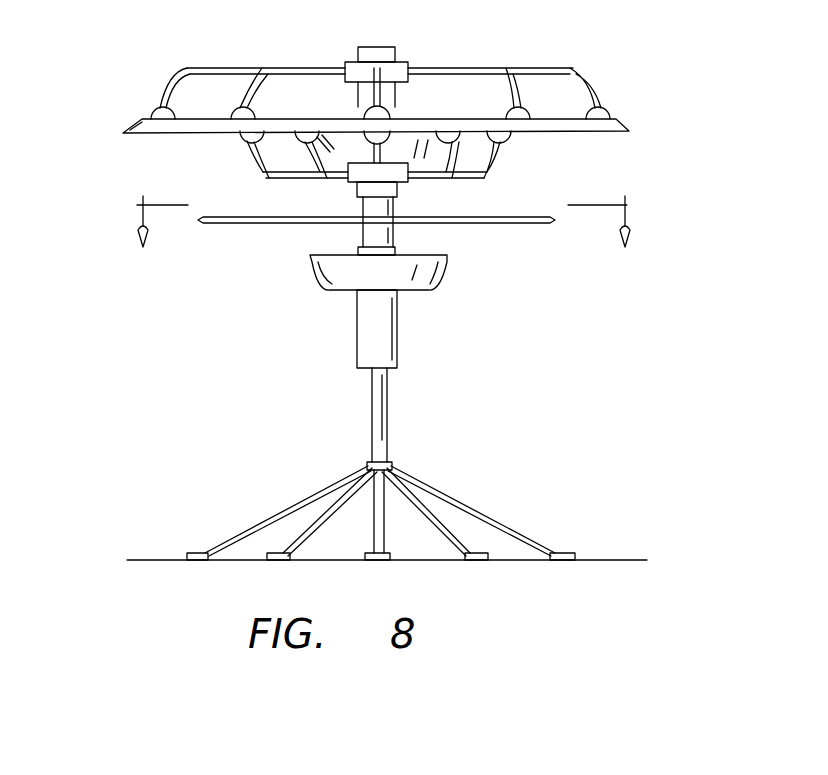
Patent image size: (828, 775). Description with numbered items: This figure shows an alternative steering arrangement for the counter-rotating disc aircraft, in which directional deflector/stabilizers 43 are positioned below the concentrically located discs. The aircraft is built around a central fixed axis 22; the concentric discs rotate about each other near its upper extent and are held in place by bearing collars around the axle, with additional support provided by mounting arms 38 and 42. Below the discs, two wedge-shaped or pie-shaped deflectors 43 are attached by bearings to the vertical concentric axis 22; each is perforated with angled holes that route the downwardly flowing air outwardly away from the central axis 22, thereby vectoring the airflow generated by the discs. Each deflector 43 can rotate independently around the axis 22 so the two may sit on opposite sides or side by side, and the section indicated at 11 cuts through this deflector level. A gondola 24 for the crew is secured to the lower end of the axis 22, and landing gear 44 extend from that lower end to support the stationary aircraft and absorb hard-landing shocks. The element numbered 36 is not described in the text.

The section line 11- 11 is at (393, 208).
The central fixed axis 22 is at (397, 355).
The gondola 24 is at (437, 272).
The hub and shaft 36 is at (340, 145).
The mounting arm 38 is at (587, 84).
The mounting arm 42 is at (497, 160).
The directional deflector/stabilizer 43 is at (258, 222).
The landing gear 44 is at (502, 518).